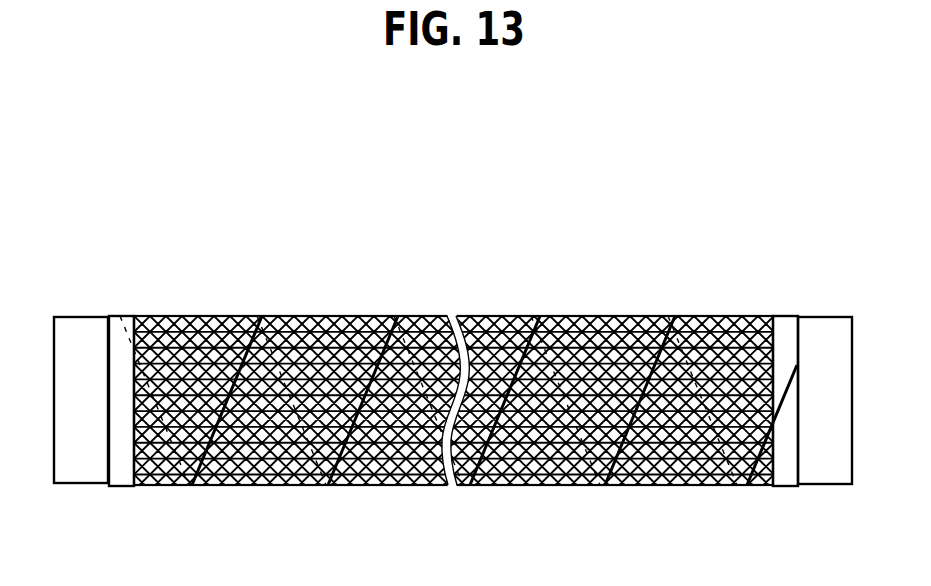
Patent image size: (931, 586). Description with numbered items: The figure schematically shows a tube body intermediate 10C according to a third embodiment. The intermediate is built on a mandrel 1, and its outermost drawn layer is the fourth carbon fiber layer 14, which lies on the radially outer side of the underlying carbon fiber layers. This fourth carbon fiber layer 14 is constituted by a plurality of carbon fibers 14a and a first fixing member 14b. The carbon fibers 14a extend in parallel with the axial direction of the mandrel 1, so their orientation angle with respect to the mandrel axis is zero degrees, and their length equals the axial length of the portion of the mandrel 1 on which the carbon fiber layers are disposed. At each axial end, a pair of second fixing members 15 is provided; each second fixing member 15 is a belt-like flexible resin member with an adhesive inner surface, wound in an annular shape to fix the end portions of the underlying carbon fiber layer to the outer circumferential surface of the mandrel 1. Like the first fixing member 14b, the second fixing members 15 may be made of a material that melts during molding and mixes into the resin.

The tube body intermediate 10C is at (124, 203).
The mandrel 1 is at (833, 322).
The second fixing member 15 is at (112, 316).
The fourth carbon fiber layer 14 is at (382, 245).
The carbon fibers 14a is at (305, 333).
The first fixing member 14b is at (241, 328).